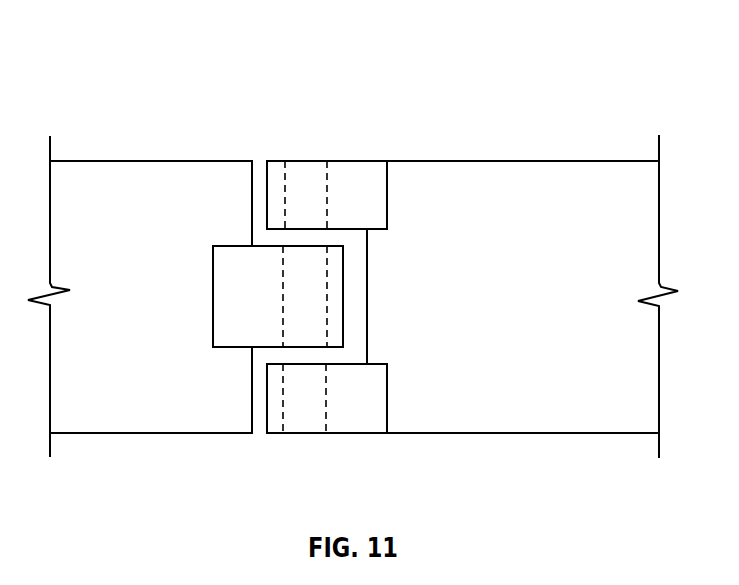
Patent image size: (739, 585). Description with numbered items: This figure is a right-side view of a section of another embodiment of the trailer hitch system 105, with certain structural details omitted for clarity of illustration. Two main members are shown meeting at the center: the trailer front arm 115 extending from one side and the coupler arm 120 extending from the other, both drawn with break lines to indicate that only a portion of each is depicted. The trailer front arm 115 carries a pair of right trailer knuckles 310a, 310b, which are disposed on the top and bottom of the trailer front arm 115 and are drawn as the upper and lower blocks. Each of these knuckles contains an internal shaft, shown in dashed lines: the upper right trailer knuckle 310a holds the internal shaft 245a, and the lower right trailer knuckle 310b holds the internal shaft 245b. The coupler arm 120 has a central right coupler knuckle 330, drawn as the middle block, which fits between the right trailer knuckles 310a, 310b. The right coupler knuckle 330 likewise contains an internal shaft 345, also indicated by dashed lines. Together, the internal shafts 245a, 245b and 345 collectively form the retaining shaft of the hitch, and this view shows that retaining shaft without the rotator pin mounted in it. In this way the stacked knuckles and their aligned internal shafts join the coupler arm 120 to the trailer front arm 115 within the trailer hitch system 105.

The trailer hitch system 105 is at (133, 32).
The trailer front arm 115 is at (502, 177).
The coupler arm 120 is at (142, 177).
The internal shaft 245a is at (328, 190).
The internal shaft 245b is at (327, 425).
The right trailer knuckle 310a is at (372, 196).
The right trailer knuckle 310b is at (370, 408).
The right coupler knuckle 330 is at (232, 288).
The internal shaft 345 is at (283, 295).